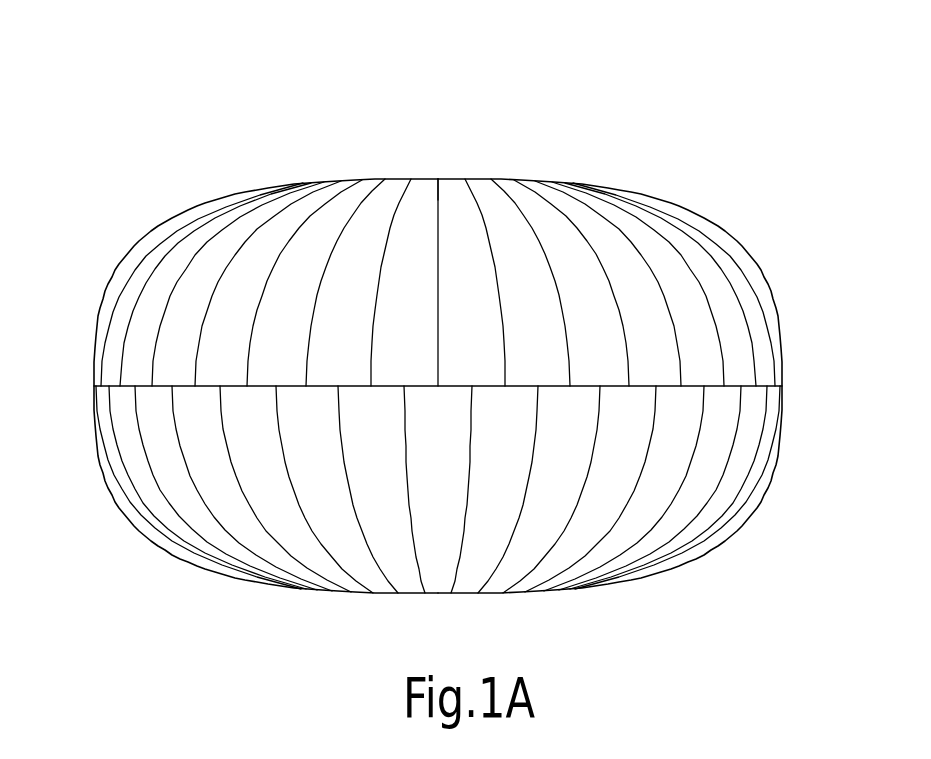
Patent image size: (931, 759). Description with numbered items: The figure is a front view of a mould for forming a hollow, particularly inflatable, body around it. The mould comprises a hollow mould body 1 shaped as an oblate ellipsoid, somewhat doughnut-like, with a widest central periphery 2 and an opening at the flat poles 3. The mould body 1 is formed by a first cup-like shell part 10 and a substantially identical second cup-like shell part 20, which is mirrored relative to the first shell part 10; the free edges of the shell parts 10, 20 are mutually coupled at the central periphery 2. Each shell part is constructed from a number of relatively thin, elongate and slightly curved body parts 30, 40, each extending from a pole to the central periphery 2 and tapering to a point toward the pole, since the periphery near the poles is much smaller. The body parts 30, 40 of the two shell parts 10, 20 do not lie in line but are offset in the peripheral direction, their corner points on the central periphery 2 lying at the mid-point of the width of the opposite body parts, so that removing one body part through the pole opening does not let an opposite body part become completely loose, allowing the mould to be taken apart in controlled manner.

The hollow mould body 1 is at (160, 123).
The central periphery 2 is at (93, 383).
The flat poles 3 is at (440, 179).
The first cup-like shell part 10 is at (733, 497).
The second cup-like shell part 20 is at (745, 274).
The body part 30 is at (412, 283).
The body part 40 is at (473, 332).